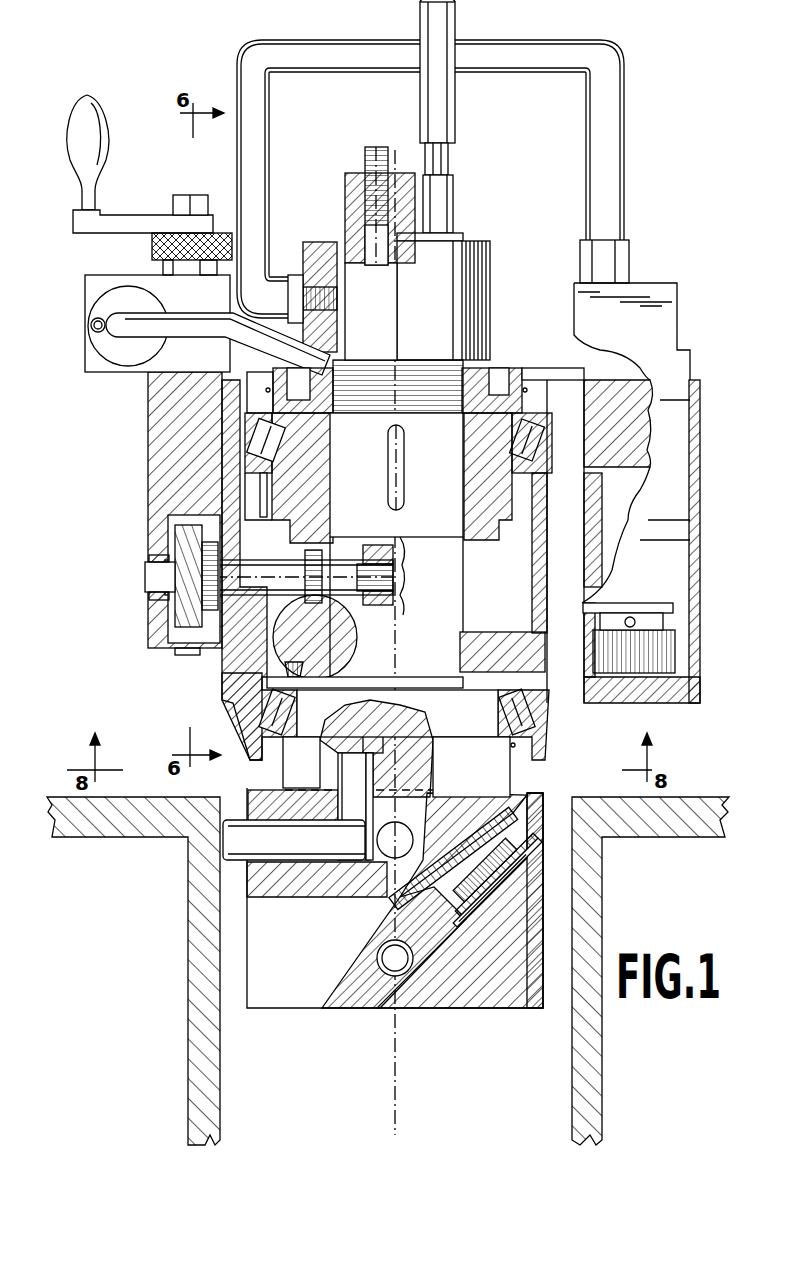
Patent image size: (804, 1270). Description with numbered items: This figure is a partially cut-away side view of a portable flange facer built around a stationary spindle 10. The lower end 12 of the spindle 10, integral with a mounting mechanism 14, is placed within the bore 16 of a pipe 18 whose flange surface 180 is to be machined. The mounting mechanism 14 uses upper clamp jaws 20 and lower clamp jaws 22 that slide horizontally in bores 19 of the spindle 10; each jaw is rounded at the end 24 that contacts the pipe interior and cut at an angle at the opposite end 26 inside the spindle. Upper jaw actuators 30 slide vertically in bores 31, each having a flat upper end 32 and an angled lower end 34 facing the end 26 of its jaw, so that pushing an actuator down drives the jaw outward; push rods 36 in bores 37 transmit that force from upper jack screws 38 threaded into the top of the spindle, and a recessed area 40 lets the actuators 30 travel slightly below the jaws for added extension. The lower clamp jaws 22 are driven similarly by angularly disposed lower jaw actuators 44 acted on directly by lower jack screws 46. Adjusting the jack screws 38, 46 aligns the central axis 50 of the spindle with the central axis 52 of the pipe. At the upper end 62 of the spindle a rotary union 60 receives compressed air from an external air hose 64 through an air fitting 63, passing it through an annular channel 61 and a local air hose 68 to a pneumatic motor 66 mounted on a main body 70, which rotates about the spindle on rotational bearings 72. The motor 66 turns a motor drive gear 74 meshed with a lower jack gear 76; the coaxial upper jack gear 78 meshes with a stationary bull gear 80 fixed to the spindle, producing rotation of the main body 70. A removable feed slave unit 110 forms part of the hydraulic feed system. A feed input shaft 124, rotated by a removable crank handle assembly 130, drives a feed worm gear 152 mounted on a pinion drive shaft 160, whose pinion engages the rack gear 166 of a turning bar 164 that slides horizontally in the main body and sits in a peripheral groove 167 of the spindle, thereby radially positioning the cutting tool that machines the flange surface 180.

The spindle 10 is at (452, 197).
The lower end 12 is at (483, 1010).
The mounting mechanism 14 is at (290, 1010).
The bore 16 is at (218, 1055).
The pipe 18 is at (189, 990).
The bores 19 is at (417, 826).
The upper clamp jaws 20 is at (243, 845).
The lower clamp jaws 22 is at (380, 977).
The end 24 is at (238, 805).
The opposite end 26 is at (350, 830).
The upper jaw actuators 30 is at (367, 763).
The bores 31 is at (357, 733).
The upper end 32 is at (354, 806).
The lower end 34 is at (367, 830).
The push rods 36 is at (372, 258).
The bores 37 is at (380, 783).
The upper jack screws 38 is at (380, 147).
The recessed area 40 is at (333, 900).
The lower jaw actuators 44 is at (400, 920).
The lower jack screws 46 is at (482, 843).
The central axis 50 is at (397, 318).
The central axis 52 is at (395, 1120).
The rotary union 60 is at (492, 295).
The annular channel 61 is at (342, 282).
The upper end 62 is at (458, 220).
The air fitting 63 is at (450, 162).
The external air hose 64 is at (456, 30).
The pneumatic motor 66 is at (677, 328).
The local air hose 68 is at (624, 105).
The main body 70 is at (690, 665).
The rotational bearings 72 is at (253, 447).
The motor drive gear 74 is at (676, 660).
The lower jack gear 76 is at (478, 633).
The upper jack gear 78 is at (529, 513).
The stationary bull gear 80 is at (260, 495).
The feed slave unit 110 is at (85, 341).
The feed input shaft 124 is at (195, 195).
The crank handle assembly 130 is at (73, 218).
The feed worm gear 152 is at (178, 625).
The pinion drive shaft 160 is at (150, 577).
The turning bar 164 is at (330, 680).
The rack gear 166 is at (357, 642).
The peripheral groove 167 is at (433, 660).
The flange surface 180 is at (712, 797).